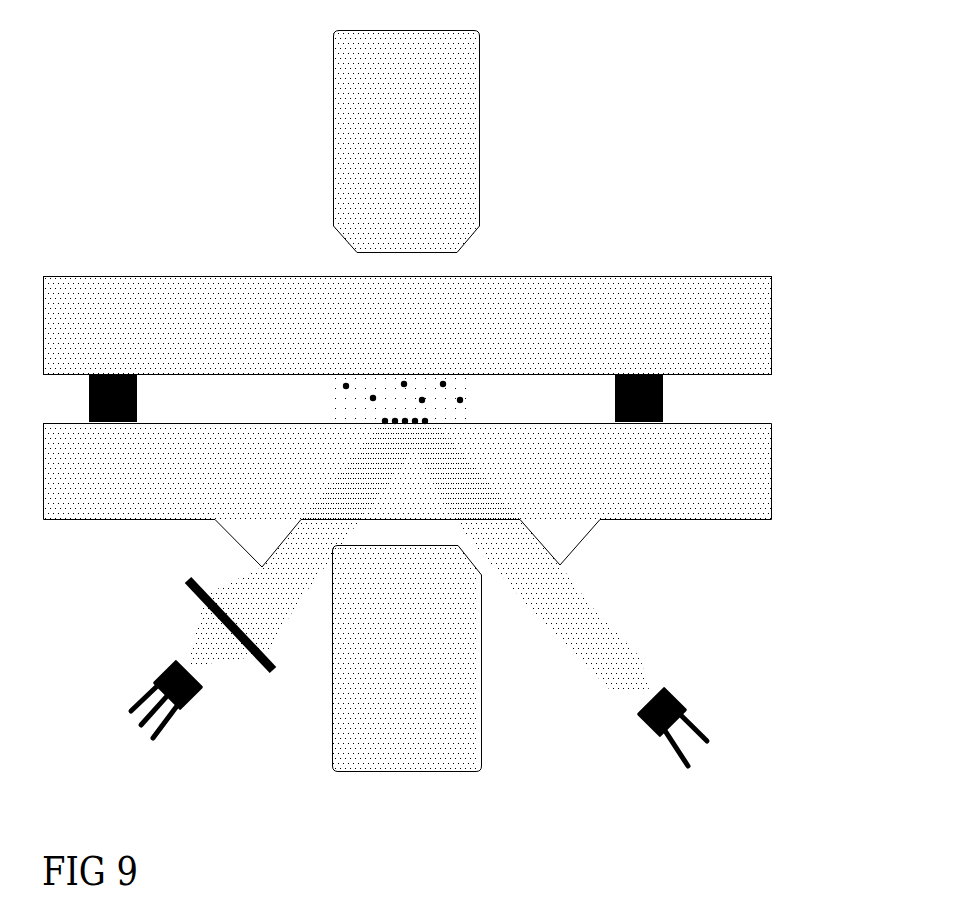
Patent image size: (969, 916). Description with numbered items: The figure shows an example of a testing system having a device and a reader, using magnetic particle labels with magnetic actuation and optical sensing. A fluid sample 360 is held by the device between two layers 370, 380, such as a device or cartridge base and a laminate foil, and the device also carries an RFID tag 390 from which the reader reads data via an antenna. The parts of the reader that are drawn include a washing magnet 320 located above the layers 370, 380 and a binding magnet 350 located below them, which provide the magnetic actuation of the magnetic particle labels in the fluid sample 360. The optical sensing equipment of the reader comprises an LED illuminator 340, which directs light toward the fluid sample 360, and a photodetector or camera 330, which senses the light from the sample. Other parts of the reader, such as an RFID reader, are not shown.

The washing magnet 320 is at (427, 140).
The photodetector or camera 330 is at (587, 595).
The LED illuminator 340 is at (248, 581).
The binding magnet 350 is at (432, 659).
The fluid sample 360 is at (344, 402).
The layer 370 is at (411, 309).
The layer 380 is at (409, 496).
The RFID tag 390 is at (648, 358).